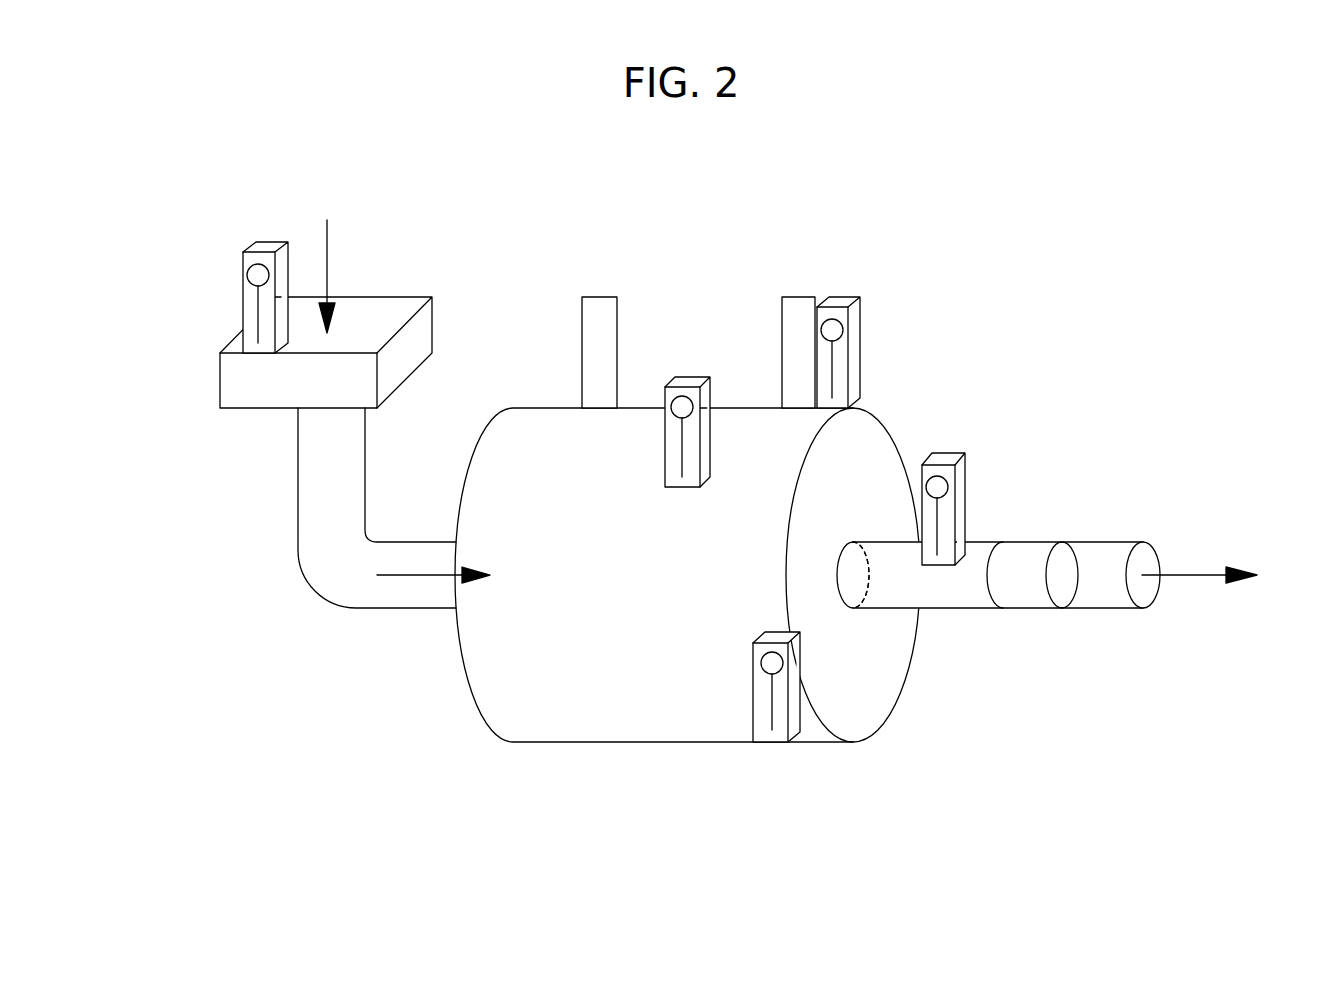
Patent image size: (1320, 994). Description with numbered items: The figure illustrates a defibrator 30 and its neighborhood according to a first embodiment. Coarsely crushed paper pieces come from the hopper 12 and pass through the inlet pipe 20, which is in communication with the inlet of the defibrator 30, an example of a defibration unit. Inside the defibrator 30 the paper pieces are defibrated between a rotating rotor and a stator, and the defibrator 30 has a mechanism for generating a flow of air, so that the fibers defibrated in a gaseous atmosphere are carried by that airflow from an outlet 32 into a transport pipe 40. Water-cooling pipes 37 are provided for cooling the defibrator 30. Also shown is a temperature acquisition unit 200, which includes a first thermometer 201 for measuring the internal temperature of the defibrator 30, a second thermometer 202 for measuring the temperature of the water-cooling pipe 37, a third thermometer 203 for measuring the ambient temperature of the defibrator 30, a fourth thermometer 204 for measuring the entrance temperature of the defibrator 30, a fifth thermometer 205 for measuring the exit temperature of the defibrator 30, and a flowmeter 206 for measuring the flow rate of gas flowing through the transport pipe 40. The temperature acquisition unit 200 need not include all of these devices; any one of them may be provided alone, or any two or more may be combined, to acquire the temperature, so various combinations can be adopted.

The hopper 12 is at (233, 382).
The inlet pipe 20 is at (315, 574).
The defibrator 30 is at (739, 402).
The outlet 32 is at (872, 572).
The water-cooling pipes 37 is at (597, 297).
The transport pipe 40 is at (1109, 560).
The temperature acquisition unit 200 is at (890, 277).
The first thermometer 201 is at (776, 740).
The second thermometer 202 is at (836, 302).
The third thermometer 203 is at (686, 380).
The fourth thermometer 204 is at (265, 248).
The fifth thermometer 205 is at (943, 456).
The flowmeter 206 is at (1033, 597).